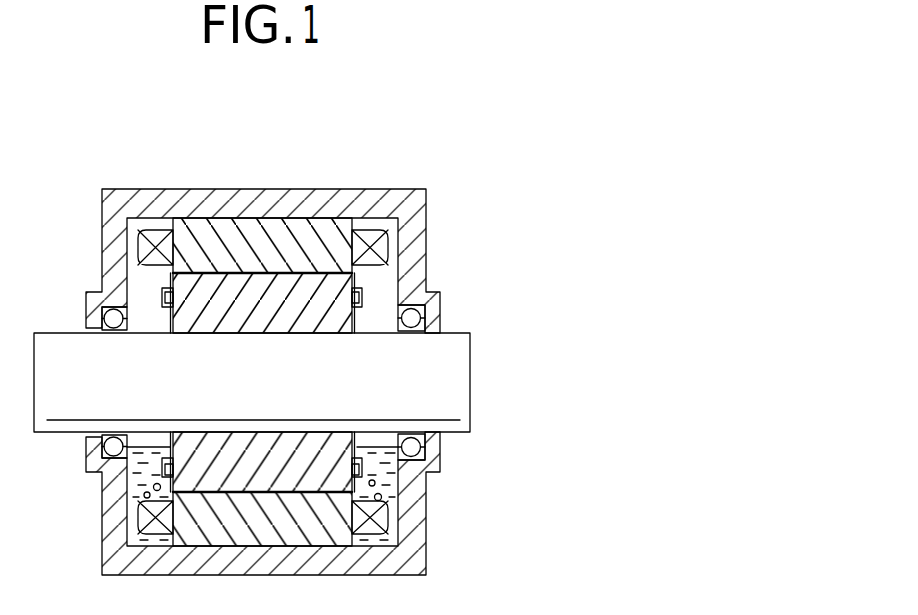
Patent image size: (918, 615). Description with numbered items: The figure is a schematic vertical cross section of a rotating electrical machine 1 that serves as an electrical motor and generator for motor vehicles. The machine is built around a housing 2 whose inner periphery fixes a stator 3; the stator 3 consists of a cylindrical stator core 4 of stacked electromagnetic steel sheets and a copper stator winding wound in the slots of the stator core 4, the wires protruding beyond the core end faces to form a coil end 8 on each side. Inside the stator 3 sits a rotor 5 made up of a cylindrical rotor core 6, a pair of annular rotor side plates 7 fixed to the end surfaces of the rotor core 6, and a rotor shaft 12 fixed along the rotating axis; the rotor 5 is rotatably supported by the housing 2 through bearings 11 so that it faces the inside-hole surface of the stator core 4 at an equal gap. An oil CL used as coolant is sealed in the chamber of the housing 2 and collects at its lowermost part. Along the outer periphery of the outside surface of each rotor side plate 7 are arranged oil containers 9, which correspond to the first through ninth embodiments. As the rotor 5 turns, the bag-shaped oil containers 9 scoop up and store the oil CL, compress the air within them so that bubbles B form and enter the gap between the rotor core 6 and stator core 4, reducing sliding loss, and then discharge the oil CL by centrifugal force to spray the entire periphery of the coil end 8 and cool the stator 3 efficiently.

The rotating electrical machine 1 is at (540, 202).
The housing 2 is at (358, 191).
The stator 3 is at (258, 123).
The stator core 4 is at (242, 228).
The rotor 5 is at (508, 232).
The rotor core 6 is at (337, 287).
The rotor side plates 7 is at (357, 313).
The coil end 8 is at (152, 235).
The oil containers 9 is at (360, 465).
The bearing 11 is at (425, 304).
The rotor shaft 12 is at (470, 380).
The bubbles B is at (147, 495).
The oil CL is at (383, 487).